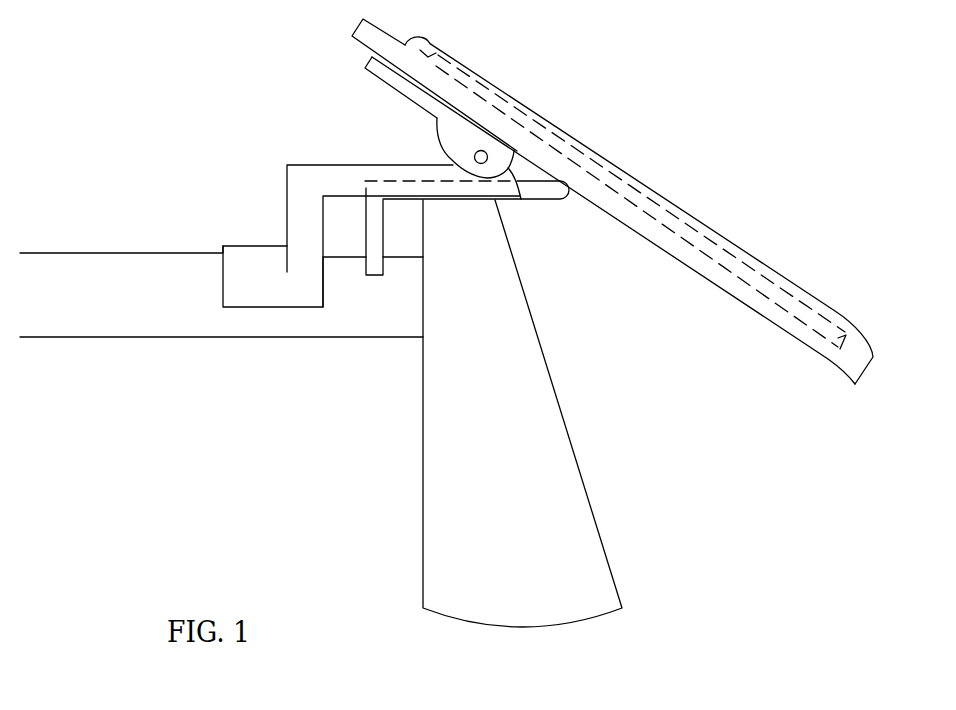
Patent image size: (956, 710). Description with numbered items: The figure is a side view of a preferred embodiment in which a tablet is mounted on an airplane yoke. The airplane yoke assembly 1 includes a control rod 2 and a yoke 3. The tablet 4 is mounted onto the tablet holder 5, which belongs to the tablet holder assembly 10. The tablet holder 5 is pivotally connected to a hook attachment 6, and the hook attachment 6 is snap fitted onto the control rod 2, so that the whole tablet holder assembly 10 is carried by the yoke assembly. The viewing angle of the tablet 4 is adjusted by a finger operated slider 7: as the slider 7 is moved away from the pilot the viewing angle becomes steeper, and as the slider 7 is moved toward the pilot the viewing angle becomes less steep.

The airplane yoke assembly 1 is at (608, 470).
The control rod 2 is at (115, 320).
The yoke 3 is at (452, 508).
The tablet 4 is at (652, 207).
The tablet holder 5 is at (665, 250).
The hook attachment 6 is at (268, 199).
The finger operated slider 7 is at (543, 200).
The tablet holder assembly 10 is at (718, 188).